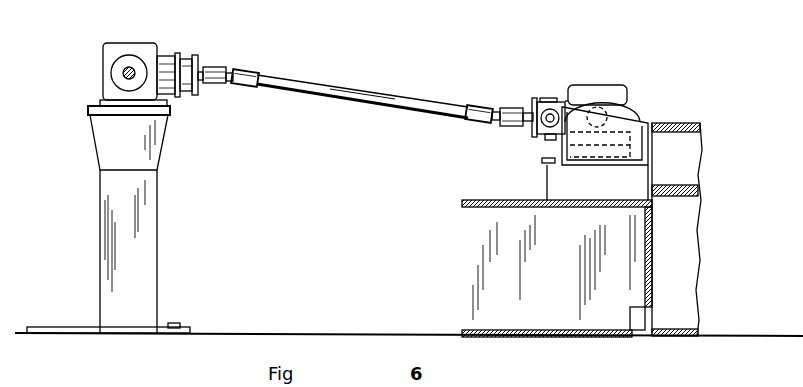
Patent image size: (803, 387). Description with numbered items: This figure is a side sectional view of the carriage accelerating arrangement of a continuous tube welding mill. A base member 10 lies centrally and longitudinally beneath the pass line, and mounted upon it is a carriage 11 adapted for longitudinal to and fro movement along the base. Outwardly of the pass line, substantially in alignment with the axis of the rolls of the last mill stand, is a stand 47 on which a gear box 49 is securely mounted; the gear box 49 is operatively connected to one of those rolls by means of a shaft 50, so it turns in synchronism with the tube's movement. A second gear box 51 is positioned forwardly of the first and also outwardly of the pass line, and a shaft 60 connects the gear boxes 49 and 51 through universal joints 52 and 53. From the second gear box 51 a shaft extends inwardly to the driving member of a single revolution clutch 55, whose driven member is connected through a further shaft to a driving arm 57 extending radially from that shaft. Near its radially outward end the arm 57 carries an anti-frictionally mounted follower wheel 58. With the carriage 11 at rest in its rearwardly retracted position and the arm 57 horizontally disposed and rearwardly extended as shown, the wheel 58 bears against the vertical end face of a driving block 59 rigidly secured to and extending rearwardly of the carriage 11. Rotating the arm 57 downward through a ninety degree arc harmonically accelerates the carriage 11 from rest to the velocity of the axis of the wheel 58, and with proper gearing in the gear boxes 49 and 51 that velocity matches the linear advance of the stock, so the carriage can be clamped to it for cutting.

The base member 10 is at (680, 318).
The carriage 11 is at (673, 122).
The stand 47 is at (147, 202).
The gear box 49 is at (127, 43).
The shaft 50 is at (123, 72).
The second gear box 51 is at (595, 85).
The universal joint 52 is at (262, 45).
The universal joint 53 is at (513, 108).
The single revolution clutch 55 is at (196, 386).
The driving arm 57 is at (547, 99).
The follower wheel 58 is at (540, 138).
The driving block 59 is at (613, 163).
The shaft 60 is at (375, 94).